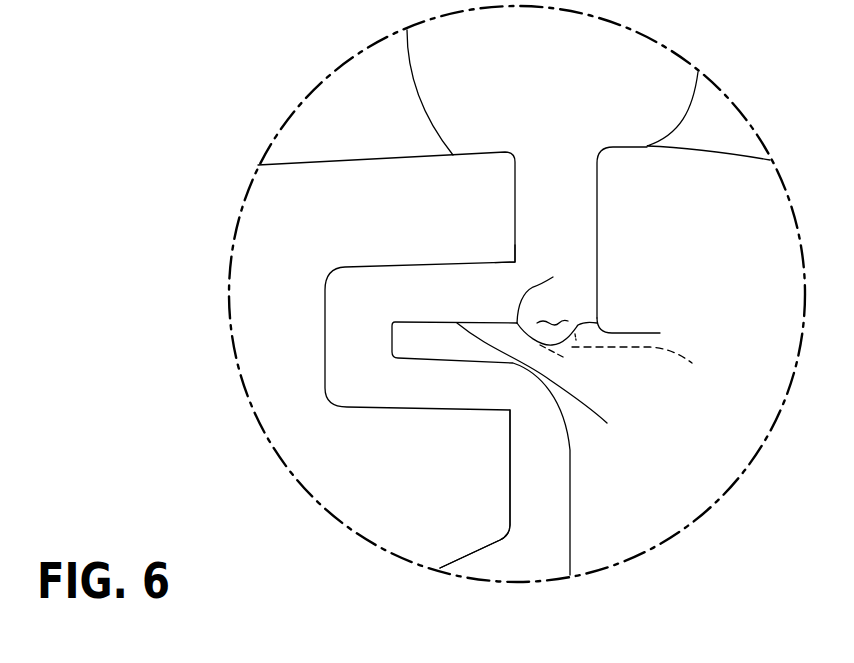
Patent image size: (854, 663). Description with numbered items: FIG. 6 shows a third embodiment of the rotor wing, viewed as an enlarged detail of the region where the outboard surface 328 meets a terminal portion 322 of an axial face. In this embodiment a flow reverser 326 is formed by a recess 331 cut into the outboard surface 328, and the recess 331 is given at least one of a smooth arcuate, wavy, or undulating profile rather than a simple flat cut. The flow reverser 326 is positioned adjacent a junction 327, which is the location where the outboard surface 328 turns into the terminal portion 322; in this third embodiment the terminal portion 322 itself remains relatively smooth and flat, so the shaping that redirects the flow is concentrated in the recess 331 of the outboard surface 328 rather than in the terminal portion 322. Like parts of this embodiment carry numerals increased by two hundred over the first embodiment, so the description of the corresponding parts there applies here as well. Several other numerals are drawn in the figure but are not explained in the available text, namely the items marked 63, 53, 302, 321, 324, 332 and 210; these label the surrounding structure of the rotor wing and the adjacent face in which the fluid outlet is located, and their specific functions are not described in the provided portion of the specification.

The first housing member 63 is at (367, 130).
The second housing member 53 is at (725, 137).
The wall portion 302 is at (605, 155).
The gap 321 is at (522, 273).
The corner 324 is at (513, 262).
The junction 327 is at (553, 277).
The flow reverser 326 is at (557, 321).
The terminal portion 322 is at (656, 335).
The recess 331 is at (563, 350).
The second contact portion 332 is at (656, 368).
The outboard surface 328 is at (553, 390).
The leg portion 210 is at (510, 463).